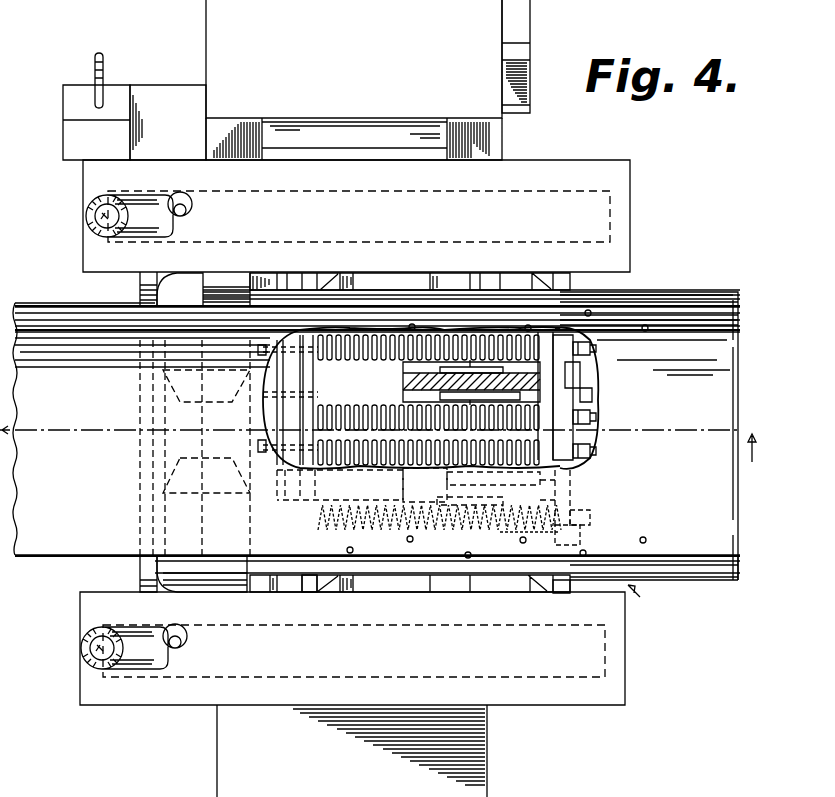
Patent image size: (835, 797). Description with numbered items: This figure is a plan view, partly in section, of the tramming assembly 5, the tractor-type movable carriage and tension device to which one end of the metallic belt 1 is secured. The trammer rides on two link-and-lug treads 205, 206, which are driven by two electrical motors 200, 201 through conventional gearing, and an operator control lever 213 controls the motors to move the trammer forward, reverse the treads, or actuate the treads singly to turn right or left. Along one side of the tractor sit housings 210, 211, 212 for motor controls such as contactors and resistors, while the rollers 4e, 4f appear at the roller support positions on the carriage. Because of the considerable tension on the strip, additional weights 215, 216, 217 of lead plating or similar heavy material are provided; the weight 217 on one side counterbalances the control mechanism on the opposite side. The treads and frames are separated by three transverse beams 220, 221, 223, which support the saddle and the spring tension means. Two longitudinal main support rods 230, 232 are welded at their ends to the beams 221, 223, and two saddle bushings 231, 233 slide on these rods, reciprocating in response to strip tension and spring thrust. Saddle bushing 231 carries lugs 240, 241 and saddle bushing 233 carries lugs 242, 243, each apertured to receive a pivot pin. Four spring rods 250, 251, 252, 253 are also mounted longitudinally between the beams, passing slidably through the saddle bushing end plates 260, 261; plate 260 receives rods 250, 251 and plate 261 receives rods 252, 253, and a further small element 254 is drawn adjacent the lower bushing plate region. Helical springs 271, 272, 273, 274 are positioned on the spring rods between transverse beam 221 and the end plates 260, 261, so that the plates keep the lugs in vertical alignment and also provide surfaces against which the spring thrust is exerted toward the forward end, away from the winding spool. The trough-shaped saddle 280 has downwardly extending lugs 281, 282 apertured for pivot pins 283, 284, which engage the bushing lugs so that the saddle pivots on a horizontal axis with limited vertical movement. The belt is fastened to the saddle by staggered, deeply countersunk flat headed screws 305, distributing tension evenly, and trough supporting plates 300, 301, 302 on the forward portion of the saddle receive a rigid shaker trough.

The belt 1 is at (42, 303).
The upper roller 4e is at (133, 200).
The lower roller 4f is at (128, 632).
The tramming apparatus 5 is at (384, 509).
The electrical motor 200 is at (232, 592).
The electrical motor 201 is at (233, 273).
The tread 205 is at (565, 677).
The tread 206 is at (565, 190).
The housing 210 is at (354, 59).
The housing 211 is at (354, 139).
The housing 212 is at (168, 122).
The operator control lever 213 is at (103, 67).
The additional weight 215 is at (175, 705).
The additional weight 216 is at (630, 200).
The additional weight 217 is at (352, 751).
The transverse beam 220 is at (138, 568).
The transverse beam 221 is at (312, 592).
The transverse beam 223 is at (563, 593).
The longitudinal main support rod 230 is at (580, 375).
The saddle bushing 231 is at (592, 395).
The longitudinal main support rod 232 is at (575, 477).
The saddle bushing 233 is at (408, 500).
The lug 240 is at (403, 378).
The lug 241 is at (455, 367).
The lug 242 is at (520, 485).
The lug 243 is at (440, 480).
The spring rod 250 is at (495, 530).
The spring rod 251 is at (596, 451).
The spring rod 252 is at (596, 417).
The spring rod 253 is at (410, 345).
The lower bolt 254 is at (580, 512).
The end plate 260 is at (580, 545).
The end plate 261 is at (553, 331).
The helical spring 271 is at (368, 530).
The helical spring 272 is at (360, 466).
The helical spring 273 is at (338, 403).
The helical spring 274 is at (350, 330).
The saddle 280 is at (640, 580).
The saddle lug 281 is at (523, 543).
The saddle lug 282 is at (596, 349).
The pivot pin 283 is at (455, 548).
The pivot pin 284 is at (478, 375).
The trough supporting plate 300 is at (738, 548).
The trough supporting plate 301 is at (738, 400).
The trough supporting plate 302 is at (738, 325).
The flat headed screw 305 is at (647, 325).